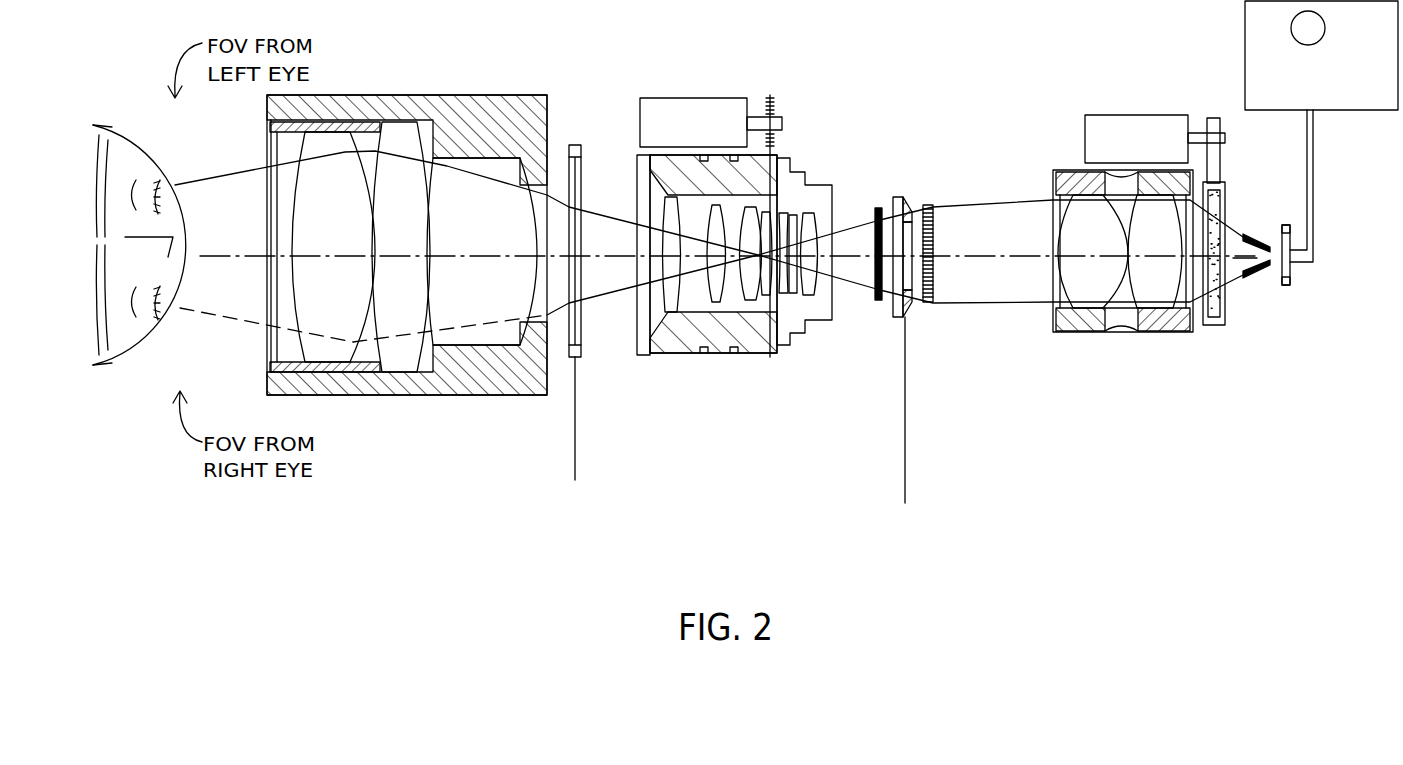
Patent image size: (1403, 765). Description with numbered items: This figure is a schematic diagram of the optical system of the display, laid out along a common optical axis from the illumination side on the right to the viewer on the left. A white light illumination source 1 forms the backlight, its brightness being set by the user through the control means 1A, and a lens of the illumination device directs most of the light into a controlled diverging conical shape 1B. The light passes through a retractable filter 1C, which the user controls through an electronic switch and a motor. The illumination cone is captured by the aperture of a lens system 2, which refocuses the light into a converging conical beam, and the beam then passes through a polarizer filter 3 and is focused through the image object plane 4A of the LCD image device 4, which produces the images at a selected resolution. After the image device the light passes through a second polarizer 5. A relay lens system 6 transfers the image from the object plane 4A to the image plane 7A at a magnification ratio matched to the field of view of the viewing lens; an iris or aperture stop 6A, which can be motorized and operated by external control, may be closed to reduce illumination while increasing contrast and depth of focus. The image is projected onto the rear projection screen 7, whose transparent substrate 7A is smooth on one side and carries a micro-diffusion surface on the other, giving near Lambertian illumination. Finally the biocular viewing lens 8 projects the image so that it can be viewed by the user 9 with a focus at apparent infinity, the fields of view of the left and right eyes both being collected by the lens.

The white light illumination source 1 is at (1287, 227).
The control means 1A is at (1335, 112).
The controlled diverging conical shape 1B is at (1243, 277).
The retractable filter 1C is at (1227, 320).
The lens system 2 is at (1062, 333).
The polarizer filter 3 is at (930, 205).
The LCD image device 4 is at (905, 197).
The image object plane 4A is at (903, 475).
The second polarizer 5 is at (875, 292).
The relay lens system 6 is at (683, 355).
The iris (aperture stop) 6A is at (782, 123).
The rear projection screen 7 is at (583, 358).
The image plane / transparent substrate 7A is at (575, 443).
The viewing lens 8 is at (523, 398).
The user 9 is at (130, 358).